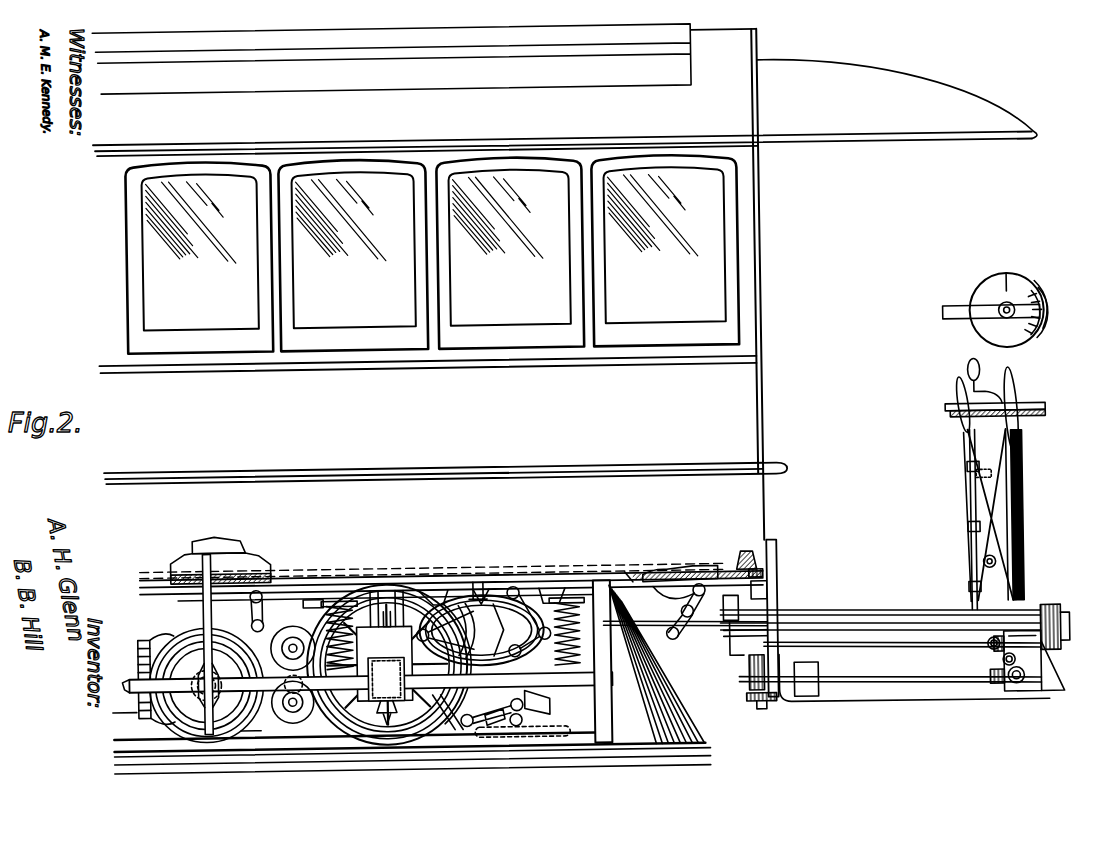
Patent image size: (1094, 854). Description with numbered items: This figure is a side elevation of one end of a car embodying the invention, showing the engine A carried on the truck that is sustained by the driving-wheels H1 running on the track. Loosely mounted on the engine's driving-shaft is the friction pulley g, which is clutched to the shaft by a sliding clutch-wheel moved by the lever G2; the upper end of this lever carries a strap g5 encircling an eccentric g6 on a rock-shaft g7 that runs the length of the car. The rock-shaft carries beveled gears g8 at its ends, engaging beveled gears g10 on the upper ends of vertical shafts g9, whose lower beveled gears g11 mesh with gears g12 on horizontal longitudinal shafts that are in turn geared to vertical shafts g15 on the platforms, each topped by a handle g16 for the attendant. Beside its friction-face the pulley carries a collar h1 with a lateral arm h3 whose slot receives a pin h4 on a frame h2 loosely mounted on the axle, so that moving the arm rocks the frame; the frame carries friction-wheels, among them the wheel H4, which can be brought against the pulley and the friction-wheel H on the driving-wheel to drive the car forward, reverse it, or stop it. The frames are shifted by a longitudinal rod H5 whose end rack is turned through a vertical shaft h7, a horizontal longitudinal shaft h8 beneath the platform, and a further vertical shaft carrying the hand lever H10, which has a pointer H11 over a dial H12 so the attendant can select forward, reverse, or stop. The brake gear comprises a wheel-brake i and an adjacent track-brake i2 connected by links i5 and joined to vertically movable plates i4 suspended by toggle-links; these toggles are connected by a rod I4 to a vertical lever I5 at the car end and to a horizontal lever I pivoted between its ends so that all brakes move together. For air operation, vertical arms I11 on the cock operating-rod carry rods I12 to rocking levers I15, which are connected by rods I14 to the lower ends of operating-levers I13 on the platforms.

The pulley g is at (418, 583).
The strap g5 is at (207, 552).
The eccentric g6 is at (238, 556).
The rock-shaft g7 is at (248, 580).
The collar h1 is at (180, 640).
The frame h2 is at (226, 612).
The lateral arm h3 is at (133, 680).
The pin h4 is at (367, 683).
The vertical arm I11 is at (262, 598).
The rod I12 is at (312, 598).
The friction-wheel H is at (366, 705).
The driving-wheel H1 is at (400, 745).
The friction-wheel H4 is at (289, 722).
The lever G2 is at (207, 730).
The engine A is at (187, 721).
The horizontal lever I is at (478, 590).
The track-brake i2 is at (483, 626).
The wheel-brake i is at (453, 735).
The plate i4 is at (522, 696).
The link i5 is at (500, 722).
The rod H5 is at (652, 573).
The rod I4 is at (685, 612).
The rocking lever I15 is at (676, 642).
The vertical shaft h7 is at (725, 640).
The beveled gear g8 is at (740, 558).
The vertical shaft g9 is at (766, 603).
The beveled gear g10 is at (762, 578).
The beveled gear g11 is at (862, 695).
The gear g12 is at (762, 684).
The rod I14 is at (822, 628).
The horizontal longitudinal shaft h8 is at (876, 655).
The vertical shaft g15 is at (1022, 580).
The vertical lever I5 is at (962, 625).
The operating-lever I13 is at (974, 480).
The handle g16 is at (990, 395).
The lever H10 is at (950, 416).
The dial H12 is at (1008, 290).
The pointer H11 is at (1042, 294).